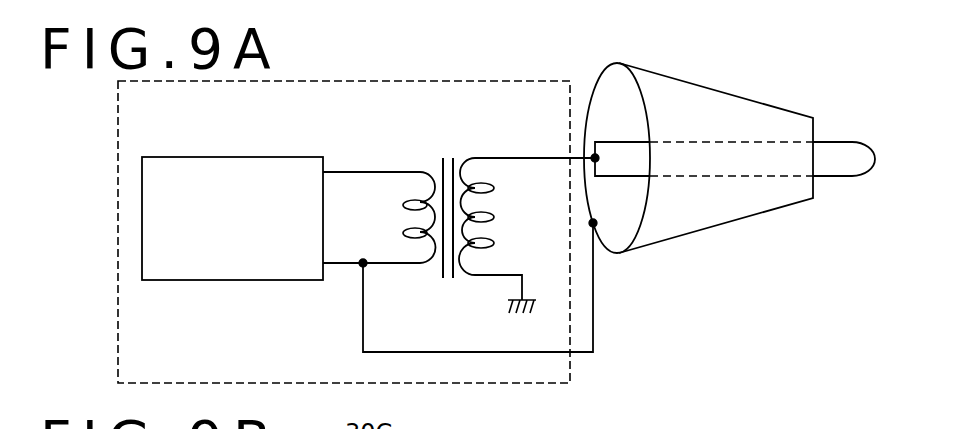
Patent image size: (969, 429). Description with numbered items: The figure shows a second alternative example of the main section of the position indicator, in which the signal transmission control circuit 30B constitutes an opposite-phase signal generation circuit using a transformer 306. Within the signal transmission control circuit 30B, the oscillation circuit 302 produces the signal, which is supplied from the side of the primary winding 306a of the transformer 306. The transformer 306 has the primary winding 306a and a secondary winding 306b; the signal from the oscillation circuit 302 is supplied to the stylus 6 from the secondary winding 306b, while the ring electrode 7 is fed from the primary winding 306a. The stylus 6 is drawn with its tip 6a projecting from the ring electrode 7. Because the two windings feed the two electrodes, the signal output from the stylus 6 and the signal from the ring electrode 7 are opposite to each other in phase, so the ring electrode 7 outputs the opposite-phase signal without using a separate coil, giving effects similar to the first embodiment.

The signal transmission control circuit 30B is at (385, 55).
The oscillation circuit 302 is at (220, 281).
The transformer 306 is at (463, 199).
The primary winding 306a is at (404, 204).
The secondary winding 306b is at (494, 217).
The stylus 6 is at (736, 117).
The electrode tip 6a is at (843, 155).
The ring electrode 7 is at (741, 219).